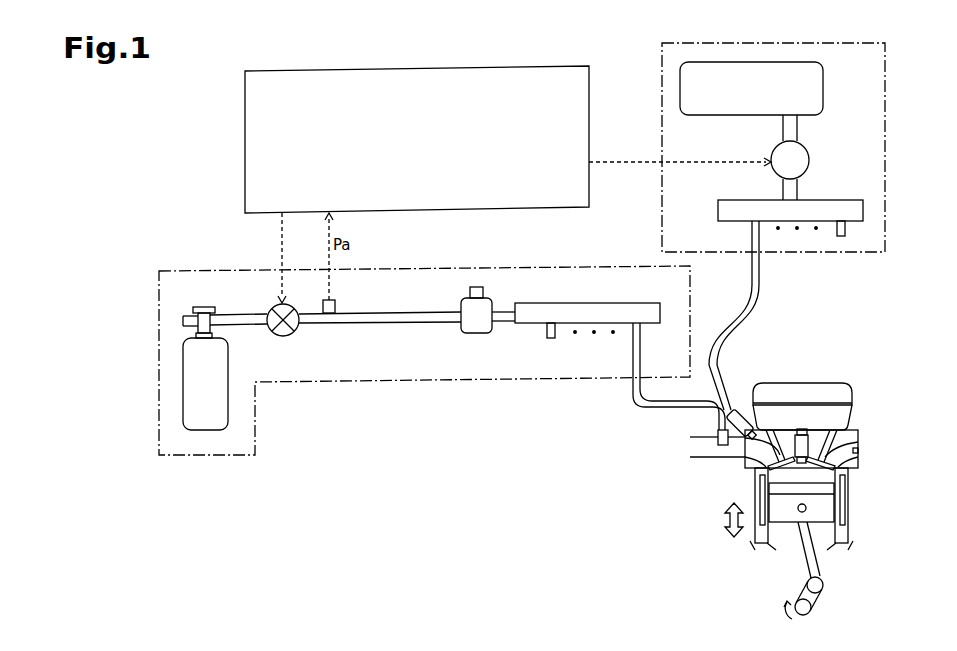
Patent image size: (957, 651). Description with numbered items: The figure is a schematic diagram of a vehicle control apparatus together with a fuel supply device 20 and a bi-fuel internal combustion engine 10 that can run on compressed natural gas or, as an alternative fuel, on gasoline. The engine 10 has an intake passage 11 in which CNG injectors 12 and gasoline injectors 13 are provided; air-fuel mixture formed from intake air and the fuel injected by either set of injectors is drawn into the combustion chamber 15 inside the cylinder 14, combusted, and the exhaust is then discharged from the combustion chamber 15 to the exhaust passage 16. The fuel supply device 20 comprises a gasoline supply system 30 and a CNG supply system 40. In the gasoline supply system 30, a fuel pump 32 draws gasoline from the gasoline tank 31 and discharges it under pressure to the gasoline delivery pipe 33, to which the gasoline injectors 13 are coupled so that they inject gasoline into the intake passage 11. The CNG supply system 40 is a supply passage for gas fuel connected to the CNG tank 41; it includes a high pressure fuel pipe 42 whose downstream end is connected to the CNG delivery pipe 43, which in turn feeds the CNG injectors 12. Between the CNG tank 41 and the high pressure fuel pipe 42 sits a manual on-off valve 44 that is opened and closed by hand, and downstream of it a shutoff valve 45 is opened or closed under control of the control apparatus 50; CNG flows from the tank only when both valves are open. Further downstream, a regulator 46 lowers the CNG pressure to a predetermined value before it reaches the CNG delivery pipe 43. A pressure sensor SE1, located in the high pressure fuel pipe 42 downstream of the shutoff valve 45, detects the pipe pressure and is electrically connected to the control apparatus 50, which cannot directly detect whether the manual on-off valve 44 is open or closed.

The internal combustion engine 10 is at (886, 432).
The intake passage 11 is at (715, 459).
The CNG injectors 12 is at (716, 432).
The gasoline injectors 13 is at (737, 413).
The cylinder 14 is at (850, 513).
The combustion chamber 15 is at (803, 477).
The exhaust passage 16 is at (856, 451).
The fuel supply device 20 is at (535, 423).
The gasoline supply system 30 is at (773, 138).
The gasoline tank 31 is at (823, 88).
The fuel pump 32 is at (809, 160).
The gasoline delivery pipe 33 is at (840, 199).
The CNG supply system 40 is at (424, 360).
The CNG tank 41 is at (228, 358).
The high pressure fuel pipe 42 is at (375, 324).
The CNG delivery pipe 43 is at (527, 323).
The manual on-off valve 44 is at (215, 310).
The shutoff valve 45 is at (283, 336).
The regulator 46 is at (476, 333).
The control apparatus 50 is at (542, 66).
The pressure sensor SE1 is at (335, 303).